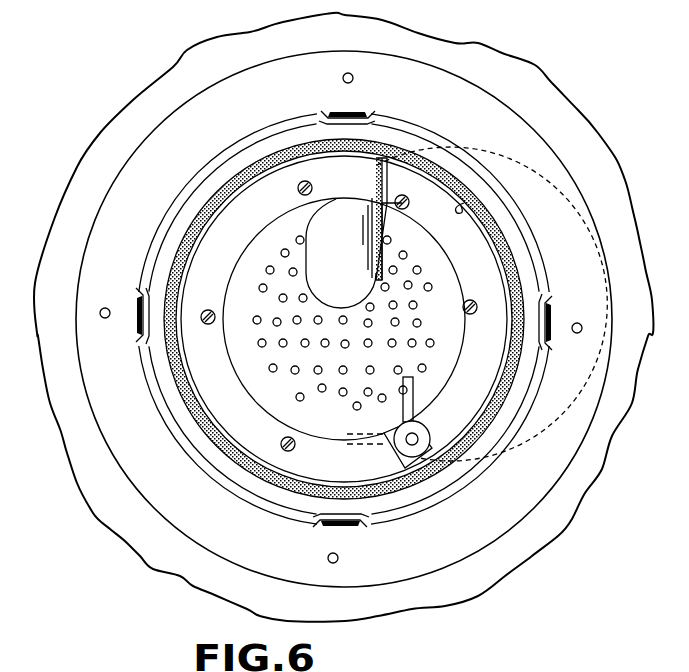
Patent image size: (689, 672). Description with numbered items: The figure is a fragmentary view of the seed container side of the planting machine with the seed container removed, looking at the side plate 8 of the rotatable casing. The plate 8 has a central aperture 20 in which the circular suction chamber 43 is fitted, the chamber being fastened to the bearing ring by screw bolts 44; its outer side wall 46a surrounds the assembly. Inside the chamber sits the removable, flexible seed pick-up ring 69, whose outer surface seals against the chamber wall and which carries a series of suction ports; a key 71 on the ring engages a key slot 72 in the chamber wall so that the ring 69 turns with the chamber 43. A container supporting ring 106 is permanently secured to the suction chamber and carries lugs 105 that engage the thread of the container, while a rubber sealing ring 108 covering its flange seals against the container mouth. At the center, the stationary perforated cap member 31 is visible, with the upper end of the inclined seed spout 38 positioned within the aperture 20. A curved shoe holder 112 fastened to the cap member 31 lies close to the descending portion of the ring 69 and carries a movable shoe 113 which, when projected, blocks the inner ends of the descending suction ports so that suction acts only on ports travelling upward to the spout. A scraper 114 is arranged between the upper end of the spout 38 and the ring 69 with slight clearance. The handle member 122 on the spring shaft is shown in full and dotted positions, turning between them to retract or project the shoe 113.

The side plate 8 is at (101, 500).
The central aperture 20 is at (180, 546).
The perforated cap member 31 is at (247, 359).
The seed spout 38 is at (337, 265).
The suction chamber 43 is at (118, 440).
The screw bolts 44 is at (343, 77).
The outer side wall 46a is at (170, 515).
The seed pick-up ring 69 is at (392, 148).
The key 71 is at (529, 312).
The key slot 72 is at (528, 366).
The lugs 105 is at (376, 118).
The container supporting ring 106 is at (181, 193).
The rubber sealing ring 108 is at (168, 249).
The shoe holder 112 is at (490, 288).
The shoe 113 is at (460, 210).
The scraper 114 is at (376, 165).
The handle member 122 is at (411, 393).